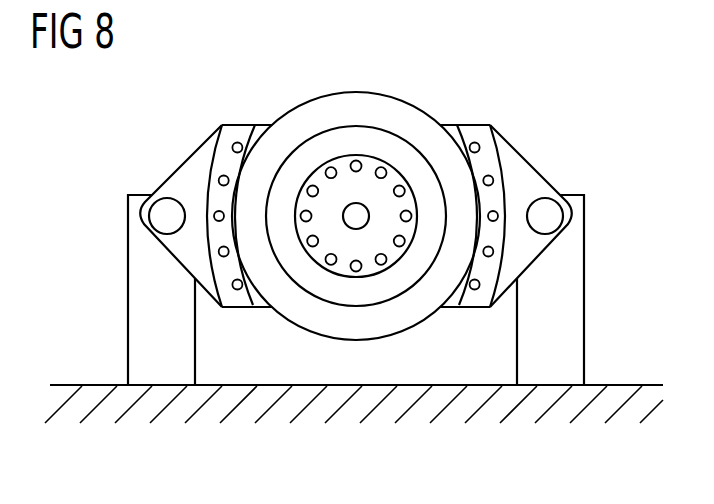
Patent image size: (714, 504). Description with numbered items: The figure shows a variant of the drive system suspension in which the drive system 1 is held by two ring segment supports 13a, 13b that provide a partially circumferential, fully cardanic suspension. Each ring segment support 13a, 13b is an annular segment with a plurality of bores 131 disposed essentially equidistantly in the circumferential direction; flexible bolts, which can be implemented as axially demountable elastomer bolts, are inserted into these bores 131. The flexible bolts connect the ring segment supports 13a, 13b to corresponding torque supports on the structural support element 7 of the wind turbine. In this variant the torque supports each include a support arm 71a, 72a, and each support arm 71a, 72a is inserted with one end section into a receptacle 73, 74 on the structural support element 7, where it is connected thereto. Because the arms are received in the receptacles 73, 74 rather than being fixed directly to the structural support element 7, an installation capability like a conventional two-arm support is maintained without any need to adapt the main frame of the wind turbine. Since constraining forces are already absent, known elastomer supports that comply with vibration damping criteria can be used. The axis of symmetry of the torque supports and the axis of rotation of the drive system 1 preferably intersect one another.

The machine housing 1 is at (366, 108).
The ring segment support 13a is at (258, 132).
The ring segment support 13b is at (453, 132).
The bores 131 is at (223, 248).
The support arm 71a is at (174, 168).
The support arm 72a is at (532, 167).
The receptacle 73 is at (128, 330).
The receptacle 74 is at (584, 330).
The structural support element 7 is at (423, 418).